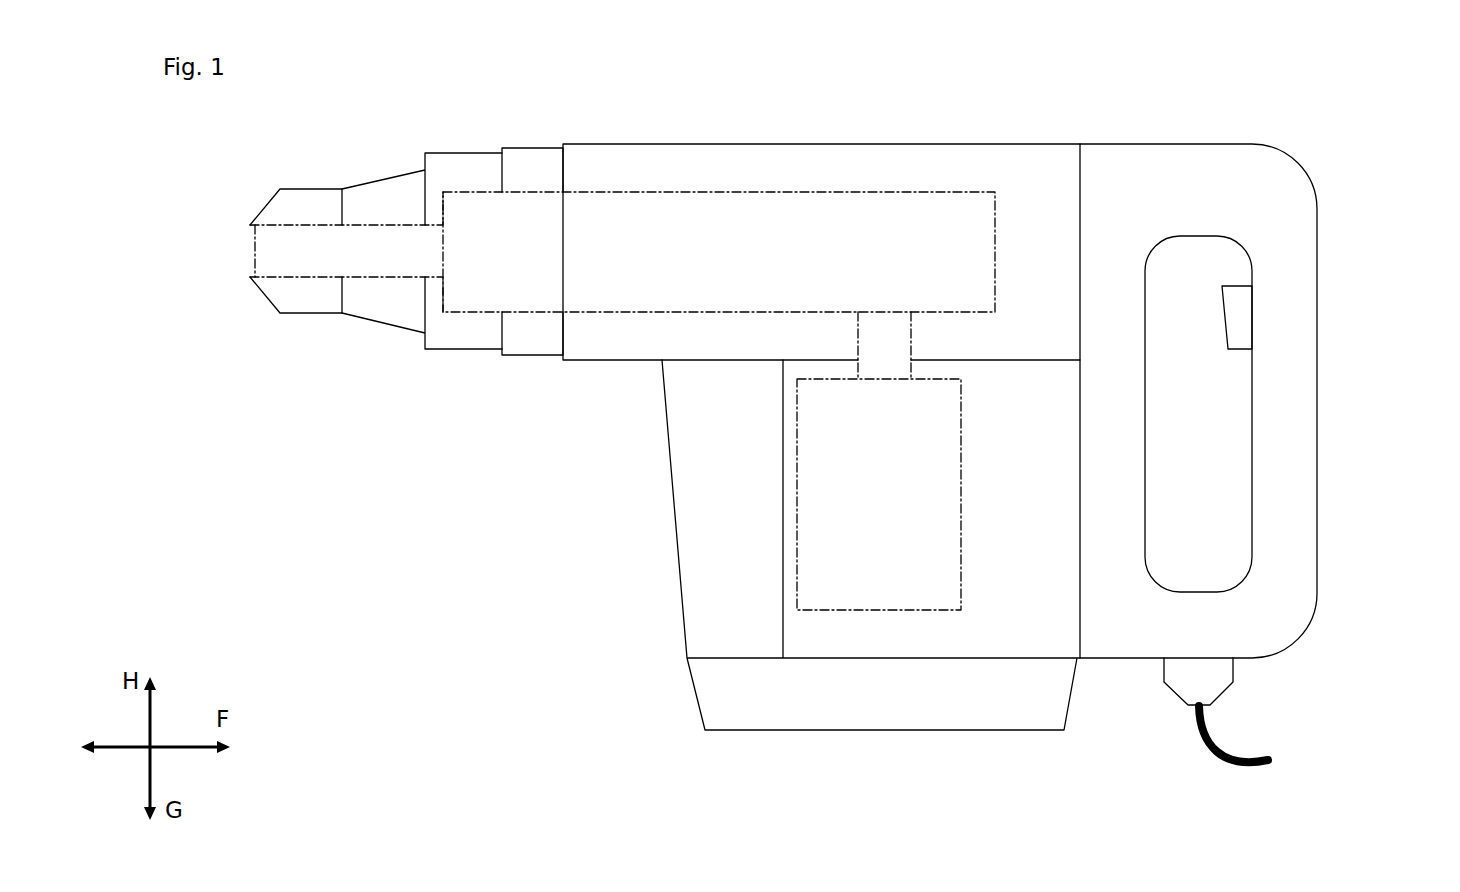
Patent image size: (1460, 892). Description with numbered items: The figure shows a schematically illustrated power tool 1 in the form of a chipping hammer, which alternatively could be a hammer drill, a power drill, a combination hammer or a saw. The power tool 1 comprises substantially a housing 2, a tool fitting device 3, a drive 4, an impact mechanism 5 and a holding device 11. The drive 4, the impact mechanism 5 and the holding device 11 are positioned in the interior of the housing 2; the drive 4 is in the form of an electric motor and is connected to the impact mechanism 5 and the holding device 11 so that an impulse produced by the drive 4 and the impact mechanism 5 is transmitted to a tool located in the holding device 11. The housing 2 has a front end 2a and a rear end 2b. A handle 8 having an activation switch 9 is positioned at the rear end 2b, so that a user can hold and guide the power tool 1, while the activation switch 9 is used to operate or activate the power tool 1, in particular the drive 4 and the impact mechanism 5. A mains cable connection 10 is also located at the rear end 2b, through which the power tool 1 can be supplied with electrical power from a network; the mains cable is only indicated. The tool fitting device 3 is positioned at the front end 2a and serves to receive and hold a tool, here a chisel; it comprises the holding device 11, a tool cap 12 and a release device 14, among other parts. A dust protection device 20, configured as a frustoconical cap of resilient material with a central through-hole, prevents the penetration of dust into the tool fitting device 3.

The power tool 1 is at (1390, 172).
The housing 2 is at (903, 157).
The front end 2a is at (585, 162).
The rear end 2b is at (1068, 199).
The tool fitting device 3 is at (226, 181).
The drive 4 is at (812, 547).
The impact mechanism 5 is at (647, 283).
The handle 8 is at (1292, 445).
The activation switch 9 is at (1238, 315).
The mains cable connection 10 is at (1207, 722).
The holding device 11 is at (408, 253).
The tool cap 12 is at (388, 200).
The release device 14 is at (535, 338).
The dust protection device 20 is at (295, 298).